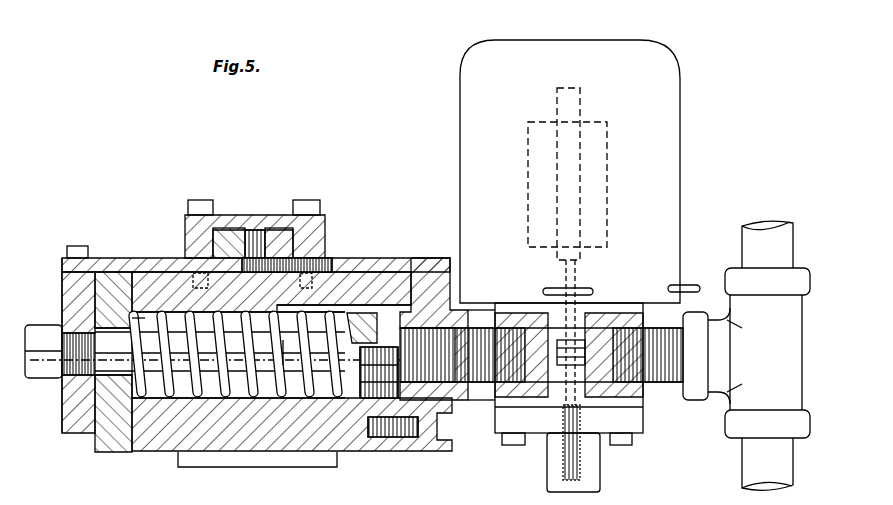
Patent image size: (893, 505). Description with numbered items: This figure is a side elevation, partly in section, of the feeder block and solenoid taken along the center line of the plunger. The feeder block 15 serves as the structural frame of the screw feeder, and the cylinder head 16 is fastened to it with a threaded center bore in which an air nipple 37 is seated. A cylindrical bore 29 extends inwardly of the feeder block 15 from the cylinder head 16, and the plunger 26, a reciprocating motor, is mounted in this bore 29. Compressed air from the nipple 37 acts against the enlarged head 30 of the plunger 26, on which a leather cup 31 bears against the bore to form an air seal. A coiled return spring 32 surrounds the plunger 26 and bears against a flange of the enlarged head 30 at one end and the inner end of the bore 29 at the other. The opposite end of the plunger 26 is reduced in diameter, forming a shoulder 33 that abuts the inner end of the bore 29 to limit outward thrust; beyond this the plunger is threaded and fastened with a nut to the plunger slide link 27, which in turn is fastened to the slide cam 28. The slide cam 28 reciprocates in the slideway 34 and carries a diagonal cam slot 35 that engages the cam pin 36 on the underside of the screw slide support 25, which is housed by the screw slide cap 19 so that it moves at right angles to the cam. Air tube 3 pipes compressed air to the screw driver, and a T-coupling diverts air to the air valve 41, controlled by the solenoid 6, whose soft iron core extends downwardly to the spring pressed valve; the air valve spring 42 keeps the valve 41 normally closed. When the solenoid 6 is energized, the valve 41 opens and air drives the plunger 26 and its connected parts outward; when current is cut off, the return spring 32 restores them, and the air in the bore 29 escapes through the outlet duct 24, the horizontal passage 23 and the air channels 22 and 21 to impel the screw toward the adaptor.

The flexible air tube 3 is at (753, 470).
The solenoid 6 is at (673, 127).
The feeder block 15 is at (162, 398).
The cylinder head 16 is at (455, 407).
The screw slide cap 19 is at (228, 214).
The air channel 21 is at (256, 452).
The feed block air channel 22 is at (230, 455).
The horizontal passage 23 is at (358, 452).
The outlet duct 24 is at (452, 307).
The screw slide support 25 is at (281, 235).
The plunger 26 is at (283, 352).
The plunger slide link 27 is at (66, 434).
The slide cam 28 is at (125, 257).
The cylindrical bore 29 is at (170, 398).
The enlarged head 30 is at (367, 306).
The leather cup 31 is at (385, 358).
The coiled return spring 32 is at (118, 449).
The shoulder 33 is at (192, 400).
The slideway 34 is at (400, 261).
The cam slot 35 is at (295, 263).
The cam pin 36 is at (257, 230).
The air nipple 37 is at (485, 400).
The air valve 41 is at (578, 355).
The air valve spring 42 is at (580, 447).